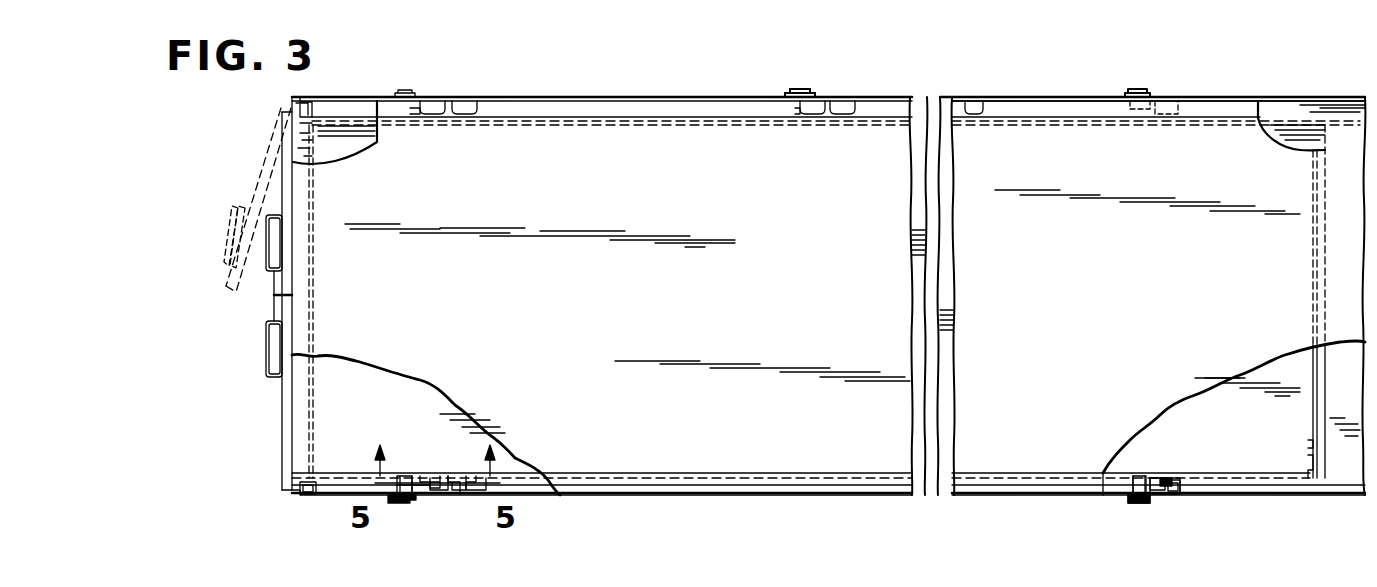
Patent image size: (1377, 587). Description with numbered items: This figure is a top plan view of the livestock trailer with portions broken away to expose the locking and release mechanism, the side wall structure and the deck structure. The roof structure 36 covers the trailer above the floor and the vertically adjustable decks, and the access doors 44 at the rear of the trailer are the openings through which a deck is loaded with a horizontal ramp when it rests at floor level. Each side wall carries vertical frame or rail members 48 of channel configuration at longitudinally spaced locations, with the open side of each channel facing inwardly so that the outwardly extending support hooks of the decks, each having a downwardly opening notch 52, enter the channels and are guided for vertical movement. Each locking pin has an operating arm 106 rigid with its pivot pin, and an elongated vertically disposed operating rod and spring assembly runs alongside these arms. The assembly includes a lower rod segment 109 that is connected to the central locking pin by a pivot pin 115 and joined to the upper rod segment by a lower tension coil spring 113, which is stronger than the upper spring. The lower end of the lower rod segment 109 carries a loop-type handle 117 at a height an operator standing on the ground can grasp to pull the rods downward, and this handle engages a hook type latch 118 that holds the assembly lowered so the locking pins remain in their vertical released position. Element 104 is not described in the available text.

The roof structure 36 is at (1178, 320).
The access doors 44 is at (265, 183).
The vertical frame or rail members 48 is at (561, 568).
The downwardly opening notch 52 is at (684, 582).
The lower track 104 is at (630, 575).
The operating arm 106 is at (408, 480).
The lower rod segment 109 is at (1143, 497).
The lower tension coil spring 113 is at (496, 581).
The pivot pin 115 is at (1140, 478).
The loop-type handle 117 is at (803, 93).
The hook type latch 118 is at (797, 94).